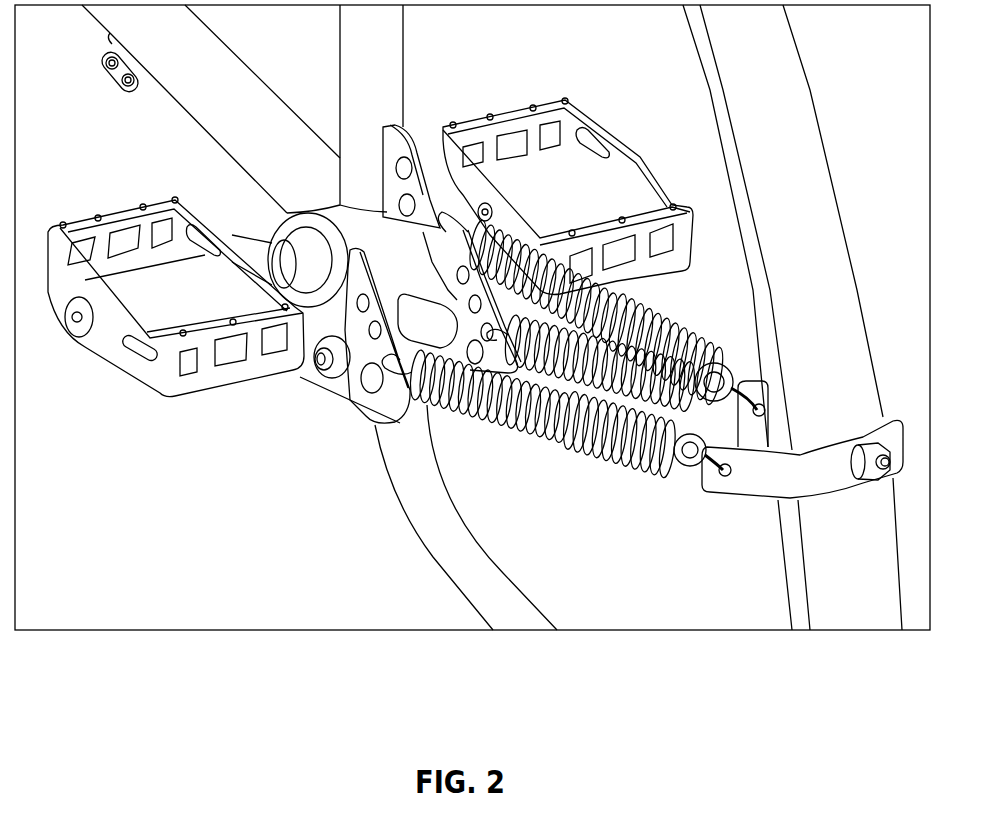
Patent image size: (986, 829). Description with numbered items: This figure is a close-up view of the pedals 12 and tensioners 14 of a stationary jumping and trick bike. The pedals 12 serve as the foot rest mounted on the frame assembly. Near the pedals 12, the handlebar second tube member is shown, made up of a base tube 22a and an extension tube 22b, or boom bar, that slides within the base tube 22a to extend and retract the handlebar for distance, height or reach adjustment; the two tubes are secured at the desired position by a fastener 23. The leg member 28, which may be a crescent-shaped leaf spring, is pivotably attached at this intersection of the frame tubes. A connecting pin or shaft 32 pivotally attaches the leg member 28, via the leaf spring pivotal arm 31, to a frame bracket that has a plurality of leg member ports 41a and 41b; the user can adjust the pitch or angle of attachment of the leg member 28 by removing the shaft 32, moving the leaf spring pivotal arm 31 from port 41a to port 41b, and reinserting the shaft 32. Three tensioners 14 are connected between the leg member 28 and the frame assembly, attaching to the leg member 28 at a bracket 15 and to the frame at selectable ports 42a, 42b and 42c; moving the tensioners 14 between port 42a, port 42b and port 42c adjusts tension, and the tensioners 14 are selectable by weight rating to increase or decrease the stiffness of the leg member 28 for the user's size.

The pedals 12 is at (123, 368).
The tensioners 14 is at (590, 345).
The bracket 15 is at (753, 500).
The base tube 22a is at (223, 156).
The extension tube 22b is at (93, 25).
The fastener 23 is at (112, 83).
The leg member 28 is at (827, 130).
The leaf spring pivotal arm 31 is at (530, 597).
The shaft 32 is at (318, 380).
The leg member port 41a is at (347, 382).
The leg member port 41b is at (360, 382).
The port 42a is at (428, 180).
The port 42b is at (455, 222).
The port 42c is at (487, 205).